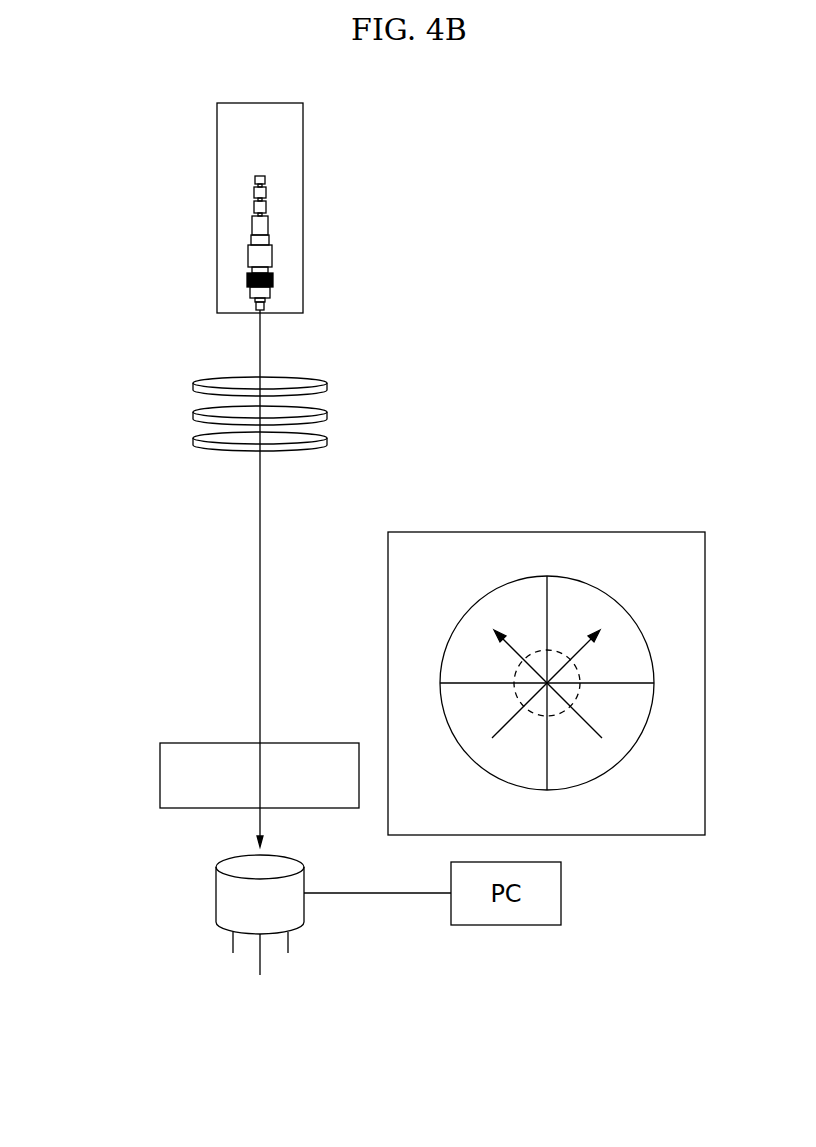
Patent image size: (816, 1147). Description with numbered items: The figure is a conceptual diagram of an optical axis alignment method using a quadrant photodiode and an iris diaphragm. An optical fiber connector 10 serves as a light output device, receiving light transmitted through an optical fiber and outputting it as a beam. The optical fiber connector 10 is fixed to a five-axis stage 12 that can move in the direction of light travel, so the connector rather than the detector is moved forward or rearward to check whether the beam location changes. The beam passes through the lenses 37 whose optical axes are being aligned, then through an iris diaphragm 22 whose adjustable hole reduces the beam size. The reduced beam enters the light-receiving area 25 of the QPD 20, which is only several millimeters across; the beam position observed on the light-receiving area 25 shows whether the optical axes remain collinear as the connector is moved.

The 5-axis stage 12 is at (217, 183).
The optical fiber connector 10 is at (250, 296).
The lenses 37 is at (195, 379).
The iris diaphragm 22 is at (160, 772).
The QPD 20 is at (221, 862).
The light-receiving area 25 is at (588, 582).